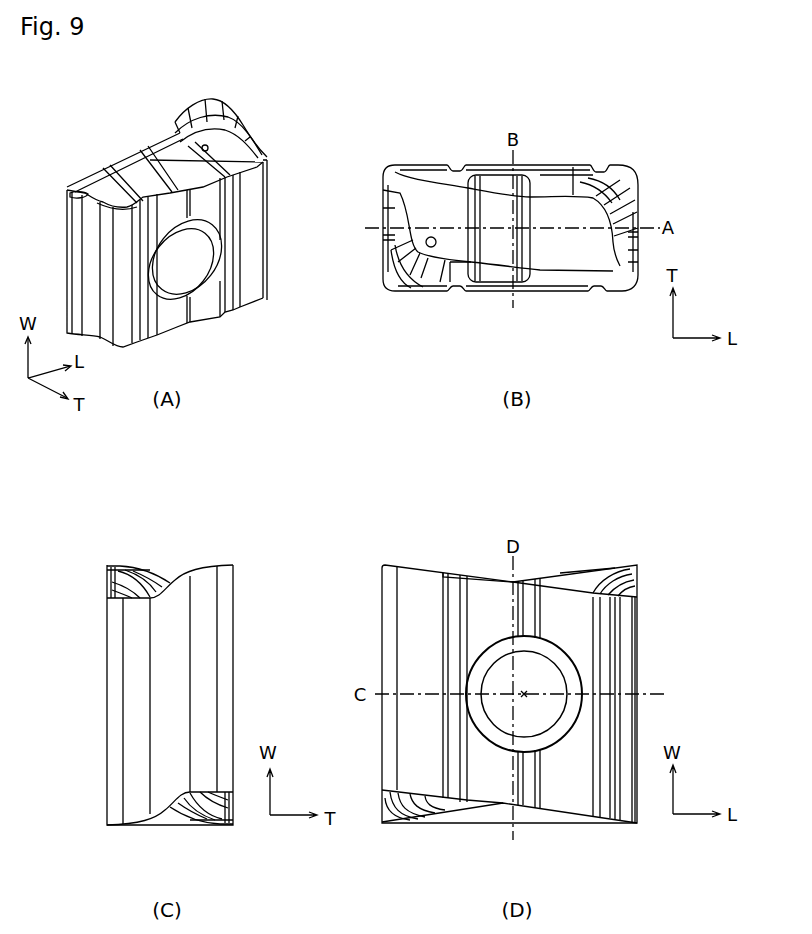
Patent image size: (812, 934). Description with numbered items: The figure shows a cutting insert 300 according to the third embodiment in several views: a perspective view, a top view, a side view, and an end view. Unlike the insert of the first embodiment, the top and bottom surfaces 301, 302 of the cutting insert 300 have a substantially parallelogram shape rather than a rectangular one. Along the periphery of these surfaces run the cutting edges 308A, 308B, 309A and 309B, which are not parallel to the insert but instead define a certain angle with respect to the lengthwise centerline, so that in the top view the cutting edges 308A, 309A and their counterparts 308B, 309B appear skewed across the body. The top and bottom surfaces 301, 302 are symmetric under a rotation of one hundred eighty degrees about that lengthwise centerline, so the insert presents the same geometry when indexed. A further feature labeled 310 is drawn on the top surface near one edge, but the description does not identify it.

The cutting insert 300 is at (96, 94).
The top surface 301 is at (252, 247).
The bottom surface 302 is at (105, 160).
The cutting edge 308A is at (248, 185).
The cutting edge 308B is at (207, 323).
The cutting edge 309A is at (155, 140).
The cutting edge 309B is at (424, 824).
The chip breaker 310 is at (455, 165).